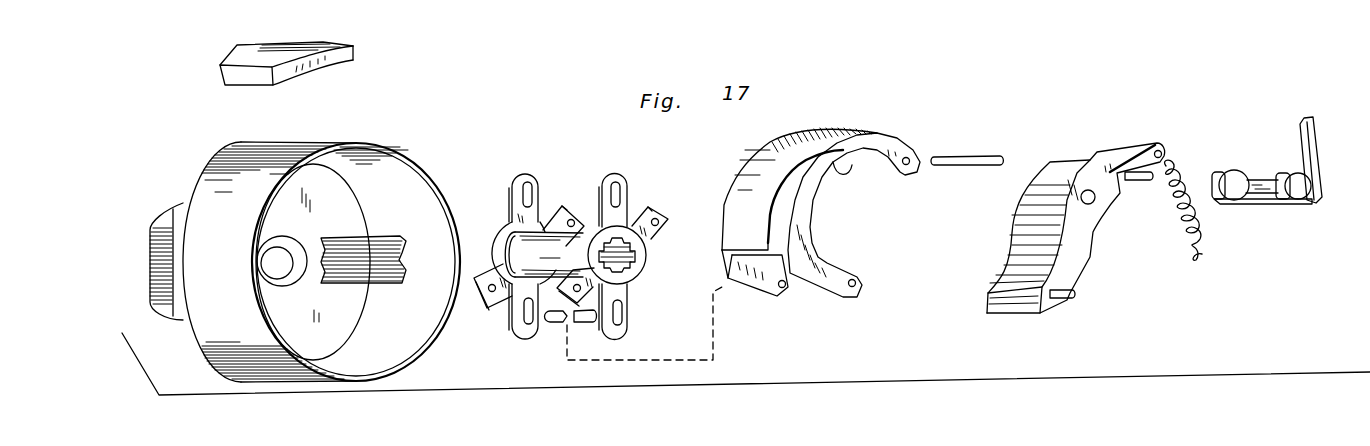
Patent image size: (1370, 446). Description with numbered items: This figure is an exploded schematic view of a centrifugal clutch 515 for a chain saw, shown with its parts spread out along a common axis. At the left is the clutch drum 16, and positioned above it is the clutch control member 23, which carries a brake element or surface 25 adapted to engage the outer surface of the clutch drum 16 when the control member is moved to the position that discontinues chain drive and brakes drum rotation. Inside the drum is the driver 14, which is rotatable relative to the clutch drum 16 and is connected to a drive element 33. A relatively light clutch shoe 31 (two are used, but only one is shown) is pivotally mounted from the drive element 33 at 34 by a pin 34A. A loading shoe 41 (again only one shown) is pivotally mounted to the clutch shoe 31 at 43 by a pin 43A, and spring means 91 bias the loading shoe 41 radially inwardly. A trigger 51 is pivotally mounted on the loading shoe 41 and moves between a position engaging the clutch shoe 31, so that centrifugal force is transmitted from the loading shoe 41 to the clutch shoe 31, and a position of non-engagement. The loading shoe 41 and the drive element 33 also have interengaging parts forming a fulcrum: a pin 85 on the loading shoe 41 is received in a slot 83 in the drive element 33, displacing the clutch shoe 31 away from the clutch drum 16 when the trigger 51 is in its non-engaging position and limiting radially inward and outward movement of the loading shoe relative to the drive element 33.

The driver 14 is at (380, 247).
The clutch drum 16 is at (272, 167).
The clutch control member 23 is at (337, 55).
The brake element or surface 25 is at (327, 68).
The clutch shoe 31 is at (795, 152).
The drive element 33 is at (547, 243).
The pivot mounting location 34 is at (649, 212).
The pin 34A is at (557, 321).
The loading shoe 41 is at (1023, 223).
The pivot mounting location 43 is at (905, 173).
The pin 43A is at (969, 156).
The trigger 51 is at (1265, 190).
The slot 83 is at (620, 308).
The pin 85 is at (1063, 300).
The spring means 91 is at (1180, 230).
The centrifugal clutch 515 is at (1223, 38).